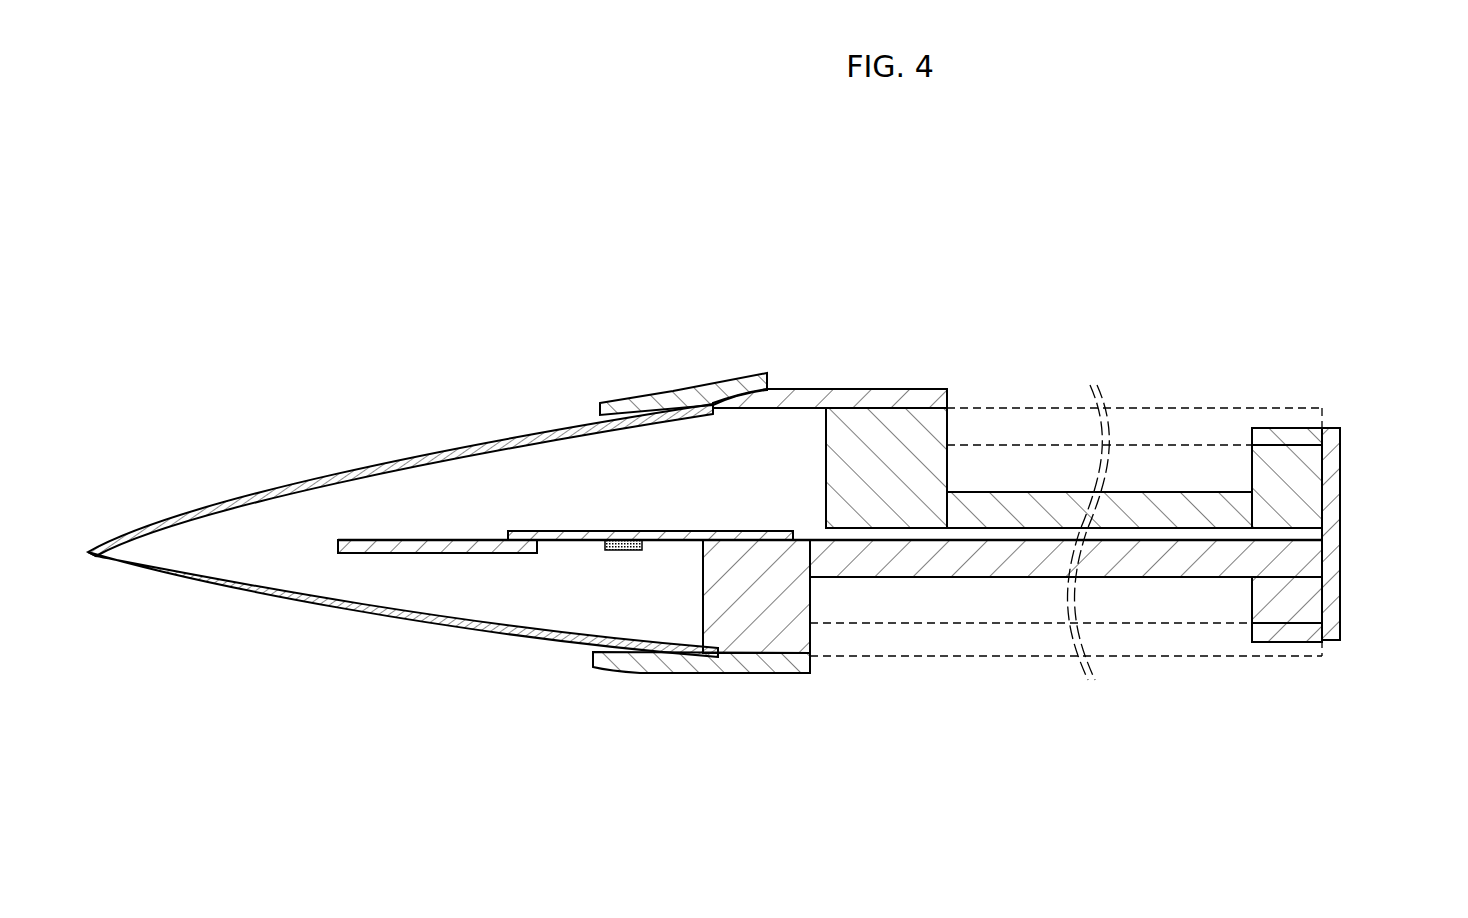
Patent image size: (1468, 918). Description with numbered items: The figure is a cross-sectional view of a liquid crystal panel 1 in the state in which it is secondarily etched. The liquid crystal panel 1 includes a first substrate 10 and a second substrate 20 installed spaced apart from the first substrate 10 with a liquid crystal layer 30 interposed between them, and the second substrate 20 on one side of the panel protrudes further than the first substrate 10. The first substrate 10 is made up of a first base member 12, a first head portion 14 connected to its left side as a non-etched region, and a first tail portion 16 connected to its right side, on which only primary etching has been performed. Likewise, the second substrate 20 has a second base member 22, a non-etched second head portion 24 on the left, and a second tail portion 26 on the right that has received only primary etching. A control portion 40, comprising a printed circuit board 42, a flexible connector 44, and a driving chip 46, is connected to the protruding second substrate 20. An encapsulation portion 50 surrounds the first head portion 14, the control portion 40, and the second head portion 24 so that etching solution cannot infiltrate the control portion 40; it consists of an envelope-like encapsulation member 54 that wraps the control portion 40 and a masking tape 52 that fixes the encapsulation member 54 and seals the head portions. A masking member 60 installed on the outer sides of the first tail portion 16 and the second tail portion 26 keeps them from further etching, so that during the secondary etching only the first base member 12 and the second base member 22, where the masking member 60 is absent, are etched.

The liquid crystal panel 1 is at (1181, 276).
The first substrate 10 is at (1336, 463).
The first base member 12 is at (1012, 500).
The first head portion 14 is at (850, 425).
The first tail portion 16 is at (1283, 448).
The second substrate 20 is at (1337, 575).
The second base member 22 is at (992, 568).
The second head portion 24 is at (773, 638).
The second tail portion 26 is at (1295, 617).
The liquid crystal layer 30 is at (1275, 535).
The control portion 40 is at (442, 580).
The printed circuit board 42 is at (407, 545).
The flexible connector 44 is at (547, 537).
The driving chip 46 is at (617, 550).
The encapsulation portion 50 is at (224, 460).
The masking tape 52 is at (745, 383).
The encapsulation member 54 is at (293, 487).
The masking member 60 is at (1332, 437).